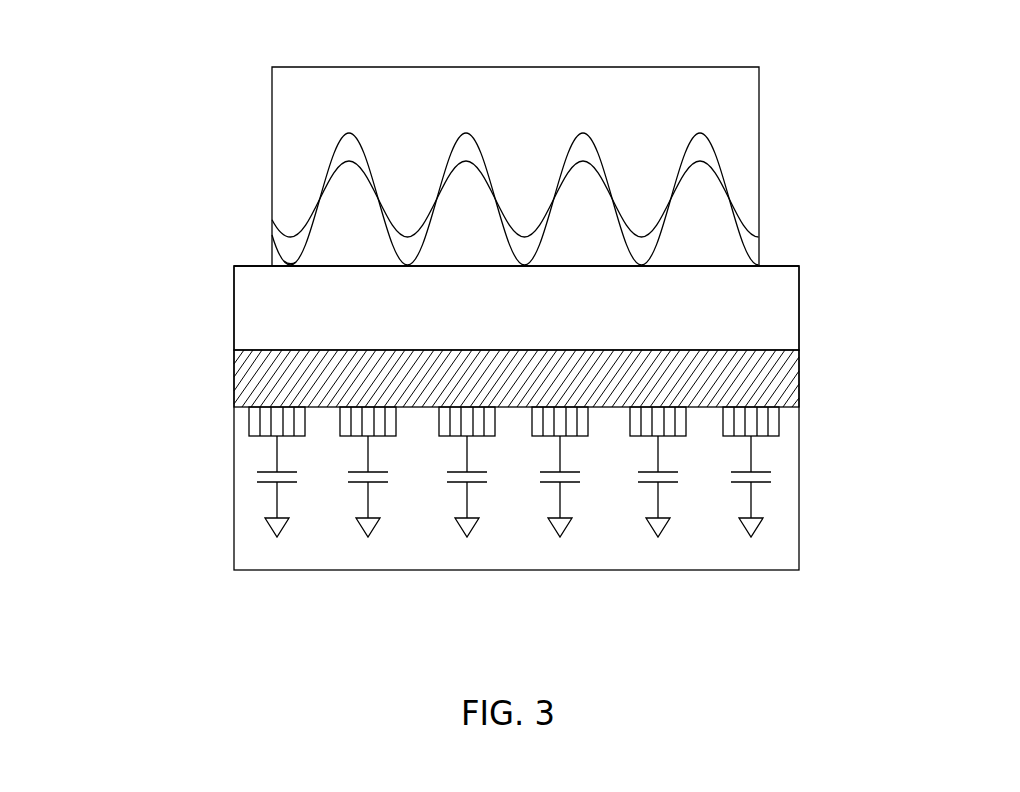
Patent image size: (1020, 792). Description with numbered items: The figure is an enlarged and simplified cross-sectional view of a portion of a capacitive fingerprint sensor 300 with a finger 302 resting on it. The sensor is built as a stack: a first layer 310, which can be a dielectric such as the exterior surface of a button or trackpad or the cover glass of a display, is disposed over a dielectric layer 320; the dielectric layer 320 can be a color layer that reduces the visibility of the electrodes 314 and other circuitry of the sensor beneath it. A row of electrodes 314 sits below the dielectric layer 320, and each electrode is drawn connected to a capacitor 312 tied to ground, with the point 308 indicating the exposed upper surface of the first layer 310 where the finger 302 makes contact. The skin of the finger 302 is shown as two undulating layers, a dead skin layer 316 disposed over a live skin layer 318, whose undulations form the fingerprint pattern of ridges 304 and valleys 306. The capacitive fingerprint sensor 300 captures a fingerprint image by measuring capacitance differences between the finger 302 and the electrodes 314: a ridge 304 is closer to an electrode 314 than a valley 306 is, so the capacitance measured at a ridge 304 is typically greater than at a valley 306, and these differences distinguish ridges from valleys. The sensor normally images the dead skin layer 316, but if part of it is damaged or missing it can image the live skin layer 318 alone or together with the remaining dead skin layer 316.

The capacitive fingerprint sensor 300 is at (142, 280).
The finger 302 is at (318, 89).
The ridge 304 is at (272, 266).
The valley 306 is at (713, 165).
The sensing surface 308 is at (799, 266).
The first layer 310 is at (799, 306).
The capacitor 312 is at (252, 474).
The electrodes 314 is at (250, 429).
The dead skin layer 316 is at (298, 244).
The live skin layer 318 is at (354, 147).
The dielectric layer 320 is at (799, 376).